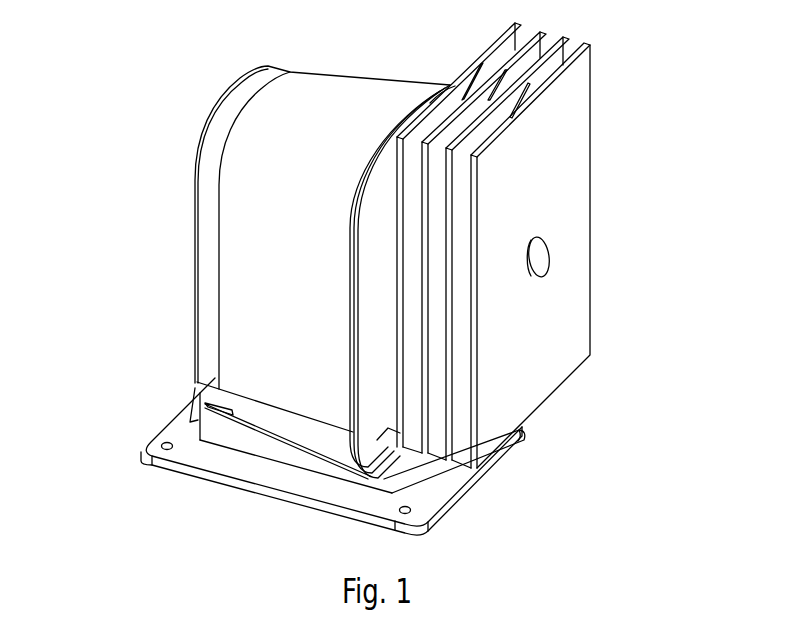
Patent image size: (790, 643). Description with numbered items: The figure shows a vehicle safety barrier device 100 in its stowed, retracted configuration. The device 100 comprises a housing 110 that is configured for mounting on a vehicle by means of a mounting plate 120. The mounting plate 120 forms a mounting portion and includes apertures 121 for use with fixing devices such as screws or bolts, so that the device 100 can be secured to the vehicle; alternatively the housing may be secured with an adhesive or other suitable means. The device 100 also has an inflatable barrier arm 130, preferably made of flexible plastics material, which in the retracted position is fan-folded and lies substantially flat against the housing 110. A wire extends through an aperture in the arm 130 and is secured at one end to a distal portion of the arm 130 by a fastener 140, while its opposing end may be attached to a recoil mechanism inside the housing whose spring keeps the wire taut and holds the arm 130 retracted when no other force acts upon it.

The vehicle safety barrier device 100 is at (136, 174).
The housing 110 is at (333, 126).
The mounting plate 120 is at (178, 424).
The apertures 121 is at (166, 450).
The inflatable barrier arm 130 is at (572, 102).
The fastener 140 is at (540, 260).